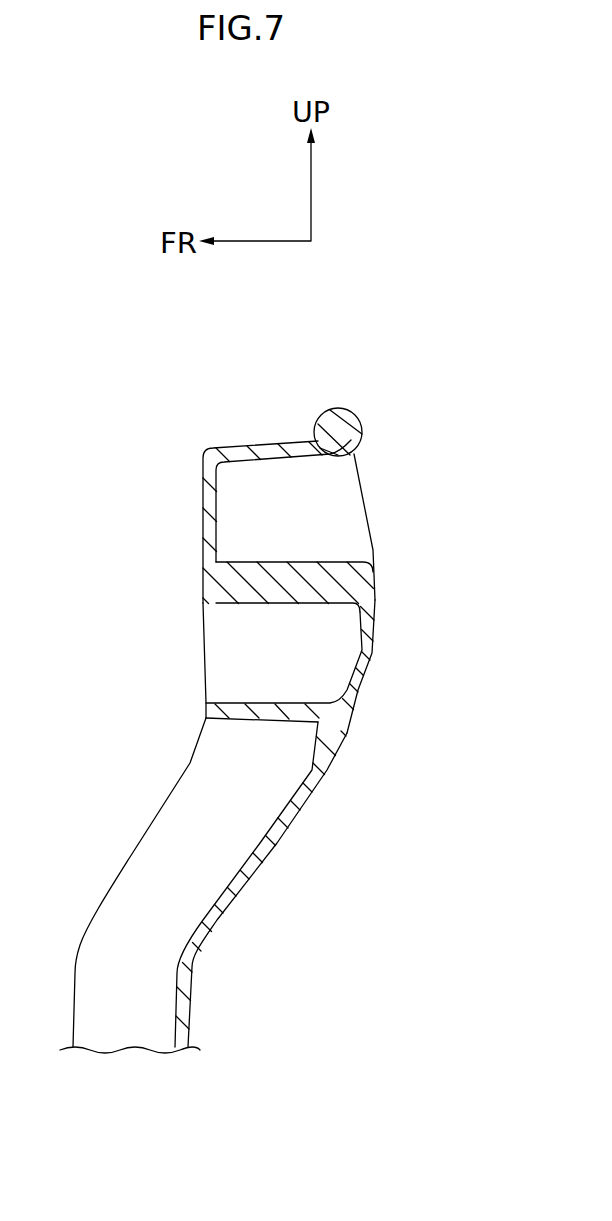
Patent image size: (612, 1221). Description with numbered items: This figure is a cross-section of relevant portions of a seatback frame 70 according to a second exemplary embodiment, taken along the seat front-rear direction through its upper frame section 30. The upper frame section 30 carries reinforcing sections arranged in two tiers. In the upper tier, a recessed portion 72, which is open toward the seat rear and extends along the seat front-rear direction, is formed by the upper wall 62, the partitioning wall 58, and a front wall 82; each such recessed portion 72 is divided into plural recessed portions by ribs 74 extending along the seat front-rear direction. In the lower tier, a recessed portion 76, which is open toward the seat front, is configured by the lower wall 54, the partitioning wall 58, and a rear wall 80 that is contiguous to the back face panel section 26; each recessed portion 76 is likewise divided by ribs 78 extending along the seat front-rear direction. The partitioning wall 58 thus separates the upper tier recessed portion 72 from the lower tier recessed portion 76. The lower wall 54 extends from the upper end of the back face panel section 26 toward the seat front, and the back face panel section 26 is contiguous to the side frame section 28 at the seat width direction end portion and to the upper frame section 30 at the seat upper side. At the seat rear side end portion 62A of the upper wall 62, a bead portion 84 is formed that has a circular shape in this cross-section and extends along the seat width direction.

The seatback frame 70 is at (112, 340).
The upper frame section 30 is at (209, 441).
The upper wall 62 is at (268, 446).
The seat rear side end portion of the upper wall 62A is at (364, 430).
The bead portion 84 is at (338, 407).
The front wall 82 is at (203, 508).
The rib 74 is at (373, 517).
The recessed portion 72 is at (300, 531).
The partitioning wall 58 is at (337, 563).
The recessed portion 76 is at (306, 665).
The rib 78 is at (205, 648).
The rear wall 80 is at (372, 655).
The lower wall 54 is at (252, 720).
The side frame section 28 is at (130, 852).
The back face panel section 26 is at (278, 841).